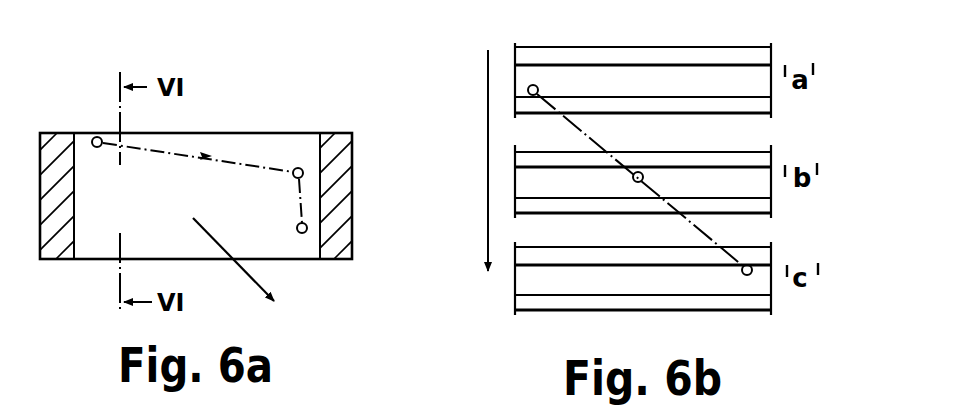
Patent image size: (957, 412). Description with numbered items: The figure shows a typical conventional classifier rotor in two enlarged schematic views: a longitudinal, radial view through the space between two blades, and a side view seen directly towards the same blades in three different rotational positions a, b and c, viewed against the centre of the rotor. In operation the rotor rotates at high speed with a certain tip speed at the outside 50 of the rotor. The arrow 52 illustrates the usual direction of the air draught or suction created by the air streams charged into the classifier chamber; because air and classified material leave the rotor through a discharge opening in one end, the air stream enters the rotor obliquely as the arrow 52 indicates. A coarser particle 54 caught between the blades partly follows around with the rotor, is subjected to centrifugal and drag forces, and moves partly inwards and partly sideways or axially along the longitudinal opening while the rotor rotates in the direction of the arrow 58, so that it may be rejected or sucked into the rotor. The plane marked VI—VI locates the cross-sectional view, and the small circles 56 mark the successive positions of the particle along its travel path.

In FIG. 6a, the outside of the rotor 50 is at (332, 132).
In FIG. 6a, the arrow 52 is at (249, 289).
In FIG. 6b, the coarser particle 54 is at (534, 84).
In FIG. 6a, the holes 56 is at (92, 133).
In FIG. 6b, the arrow 58 is at (486, 180).